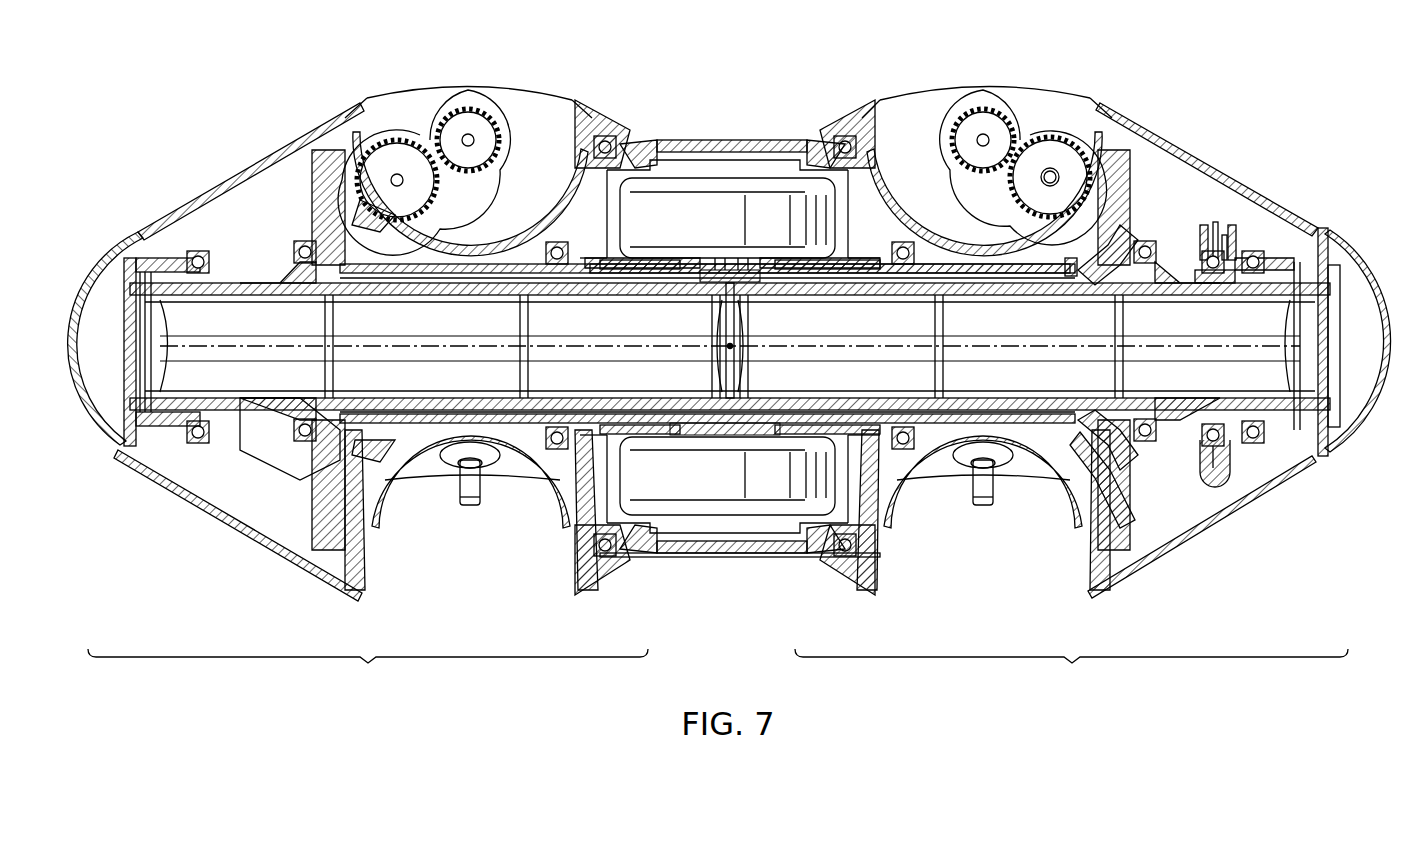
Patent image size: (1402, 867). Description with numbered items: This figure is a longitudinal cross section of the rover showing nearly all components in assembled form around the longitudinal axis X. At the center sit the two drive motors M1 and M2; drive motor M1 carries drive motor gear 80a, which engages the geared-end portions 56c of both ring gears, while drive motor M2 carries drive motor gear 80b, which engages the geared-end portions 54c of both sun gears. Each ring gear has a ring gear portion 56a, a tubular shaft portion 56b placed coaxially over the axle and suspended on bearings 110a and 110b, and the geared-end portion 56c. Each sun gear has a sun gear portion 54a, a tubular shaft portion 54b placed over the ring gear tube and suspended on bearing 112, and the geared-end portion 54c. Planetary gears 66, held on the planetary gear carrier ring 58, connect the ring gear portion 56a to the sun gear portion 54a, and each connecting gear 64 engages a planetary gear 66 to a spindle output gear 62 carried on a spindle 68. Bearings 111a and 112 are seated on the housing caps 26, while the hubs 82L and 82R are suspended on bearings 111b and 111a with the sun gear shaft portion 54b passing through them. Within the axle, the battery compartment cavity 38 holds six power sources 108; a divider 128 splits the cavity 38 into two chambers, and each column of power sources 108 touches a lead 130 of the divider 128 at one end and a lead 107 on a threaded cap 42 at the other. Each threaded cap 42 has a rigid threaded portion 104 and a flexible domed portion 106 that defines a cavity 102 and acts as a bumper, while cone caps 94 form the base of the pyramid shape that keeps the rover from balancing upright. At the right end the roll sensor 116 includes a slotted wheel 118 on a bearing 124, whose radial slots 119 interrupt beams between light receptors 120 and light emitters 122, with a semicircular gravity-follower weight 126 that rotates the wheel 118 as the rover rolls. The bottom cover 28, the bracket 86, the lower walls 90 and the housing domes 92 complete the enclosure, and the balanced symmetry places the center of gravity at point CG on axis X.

The housing cap 26 is at (578, 195).
The bottom cover 28 is at (692, 560).
The battery compartment cavity 38 is at (260, 410).
The threaded cap 42 is at (100, 255).
The sun gear portion 54a is at (1070, 278).
The tubular shaft portion 54b is at (960, 274).
The geared-end portion 54c is at (680, 262).
The ring gear portion 56a is at (1145, 170).
The tubular shaft portion 56b is at (1005, 290).
The geared-end portion 56c is at (755, 290).
The planetary gear carrier ring 58 is at (350, 284).
The spindle output gear 62 is at (468, 118).
The connecting gear 64 is at (398, 150).
The planetary gear 66 is at (1082, 478).
The spindle 68 is at (468, 508).
The drive motor gear 80a is at (702, 268).
The drive motor gear 80b is at (693, 436).
The left hub 82L is at (368, 676).
The right hub 82R is at (1071, 676).
The clamp 86 is at (378, 220).
The lower housing wall 90 is at (572, 560).
The housing dome 92 is at (525, 100).
The cone cap 94 is at (225, 185).
The cavity 102 is at (105, 420).
The rigid threaded portion 104 is at (128, 262).
The domed portion 106 is at (100, 440).
The lead 107 is at (160, 322).
The power source 108 is at (245, 332).
The bearing 110a is at (300, 242).
The bearing 110b is at (682, 290).
The bearing 111a is at (606, 138).
The bearing 111b is at (196, 252).
The bearing 112 is at (547, 250).
The roll sensor 116 is at (1250, 220).
The slotted wheel 118 is at (1216, 255).
The radial slot 119 is at (1210, 452).
The light receptor 120 is at (1216, 222).
The light emitter 122 is at (1226, 235).
The bearing 124 is at (1207, 283).
The gravity-follower weight 126 is at (1215, 490).
The divider 128 is at (736, 340).
The lead 130 is at (722, 330).
The drive motor M1 is at (710, 178).
The drive motor M2 is at (752, 520).
The center of gravity point CG is at (727, 347).
The longitudinal axis X is at (478, 346).